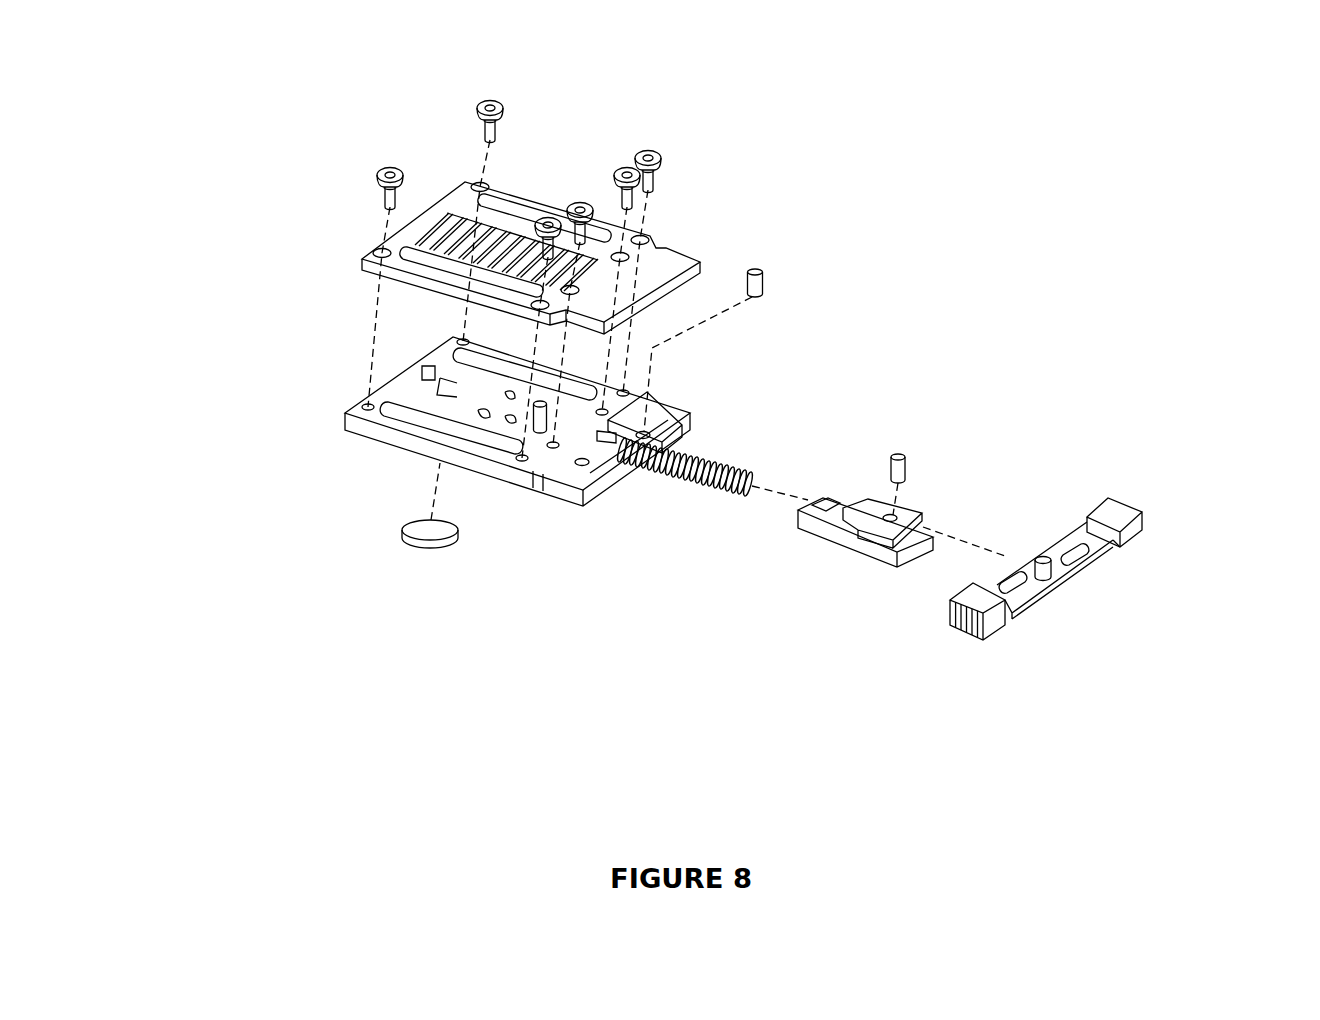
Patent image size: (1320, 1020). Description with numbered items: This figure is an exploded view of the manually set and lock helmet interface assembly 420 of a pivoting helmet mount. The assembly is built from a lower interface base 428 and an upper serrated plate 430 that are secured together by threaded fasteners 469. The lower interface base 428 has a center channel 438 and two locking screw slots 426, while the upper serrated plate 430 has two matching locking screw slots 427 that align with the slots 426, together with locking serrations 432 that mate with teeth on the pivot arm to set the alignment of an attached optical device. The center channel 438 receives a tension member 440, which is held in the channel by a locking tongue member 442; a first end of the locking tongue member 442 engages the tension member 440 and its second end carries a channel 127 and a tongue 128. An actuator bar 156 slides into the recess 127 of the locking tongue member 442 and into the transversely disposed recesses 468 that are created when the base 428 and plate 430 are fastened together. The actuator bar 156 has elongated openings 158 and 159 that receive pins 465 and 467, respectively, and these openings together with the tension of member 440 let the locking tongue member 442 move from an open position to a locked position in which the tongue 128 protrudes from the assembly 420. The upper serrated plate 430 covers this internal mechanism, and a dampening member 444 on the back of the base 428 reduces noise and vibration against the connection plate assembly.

The helmet interface assembly 420 is at (200, 112).
The upper serrated plate 430 is at (655, 267).
The locking screw slots 427 is at (447, 262).
The locking serrations 432 is at (455, 225).
The threaded fasteners 469 is at (497, 103).
The lower interface base 428 is at (485, 465).
The locking screw slots 426 is at (413, 412).
The center channel 438 is at (620, 483).
The transversely disposed recesses 468 is at (663, 427).
The pins 465 is at (763, 282).
The tension member 440 is at (727, 470).
The pin 467 is at (907, 458).
The locking tongue member 442 is at (888, 583).
The channel 127 is at (908, 530).
The tongue 128 is at (908, 558).
The dampening member 444 is at (408, 545).
The actuator bar 156 is at (1115, 510).
The elongated openings 158 is at (1078, 555).
The elongated opening 159 is at (1045, 570).